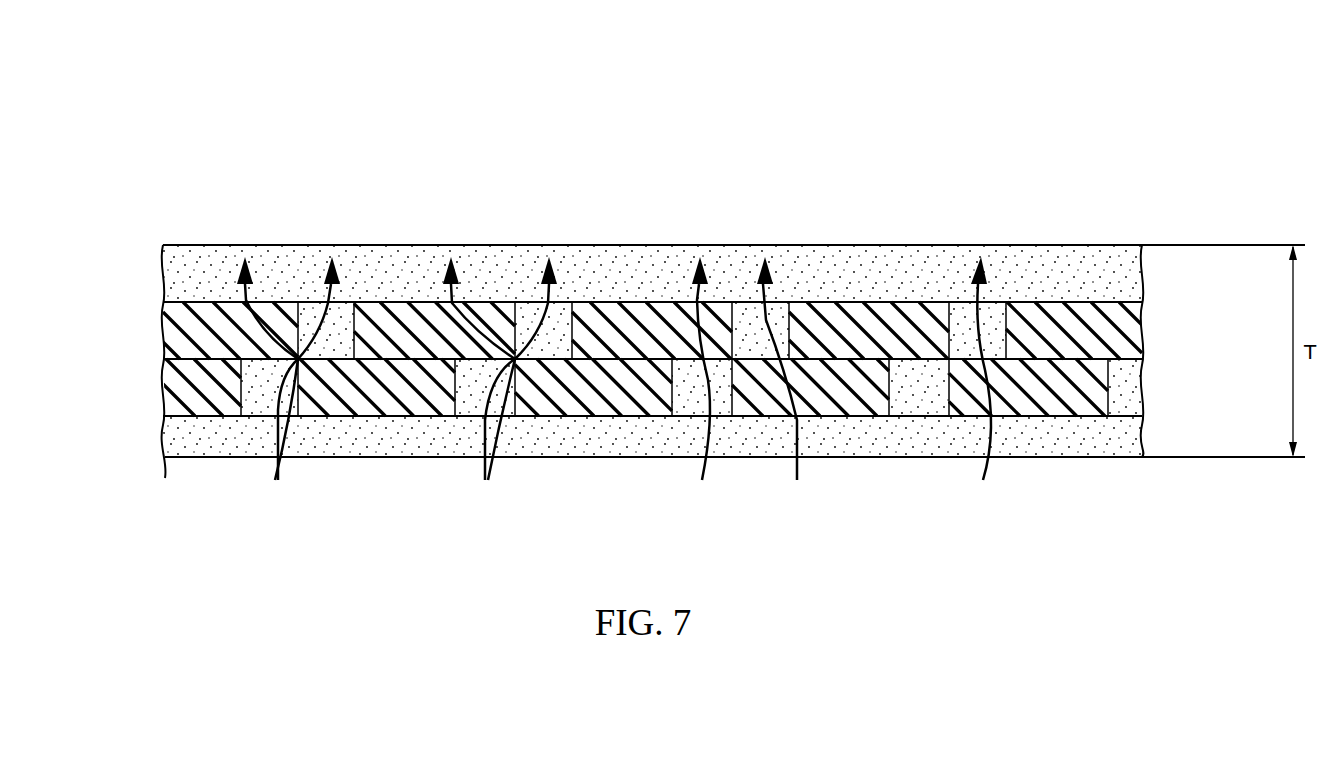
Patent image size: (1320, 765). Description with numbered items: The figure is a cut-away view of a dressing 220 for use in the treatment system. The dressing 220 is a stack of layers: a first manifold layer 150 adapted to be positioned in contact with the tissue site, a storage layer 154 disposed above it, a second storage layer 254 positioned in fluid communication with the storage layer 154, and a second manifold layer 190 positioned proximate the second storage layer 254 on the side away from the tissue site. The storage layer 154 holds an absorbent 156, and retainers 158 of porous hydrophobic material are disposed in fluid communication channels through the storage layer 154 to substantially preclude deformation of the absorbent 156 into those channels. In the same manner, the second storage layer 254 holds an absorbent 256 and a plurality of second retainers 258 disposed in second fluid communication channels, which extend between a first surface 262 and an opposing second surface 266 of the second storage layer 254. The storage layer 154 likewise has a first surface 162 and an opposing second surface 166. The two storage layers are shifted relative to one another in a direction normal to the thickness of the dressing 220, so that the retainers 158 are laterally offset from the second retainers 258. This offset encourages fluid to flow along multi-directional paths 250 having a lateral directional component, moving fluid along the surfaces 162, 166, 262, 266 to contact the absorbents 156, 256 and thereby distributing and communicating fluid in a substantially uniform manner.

The dressing 220 is at (427, 145).
The second manifold layer 190 is at (172, 274).
The second storage layer 254 is at (163, 318).
The second surface of the storage layer 166 is at (190, 352).
The storage layer 154 is at (163, 397).
The first manifold layer 150 is at (164, 438).
The absorbent 156 is at (181, 408).
The retainers 158 is at (258, 405).
The first surface of the storage layer 162 is at (355, 418).
The multi-directional paths 250 is at (275, 462).
The absorbent 256 is at (204, 305).
The second retainers 258 is at (342, 305).
The first surface of the second storage layer 262 is at (1140, 377).
The second surface of the second storage layer 266 is at (1142, 298).